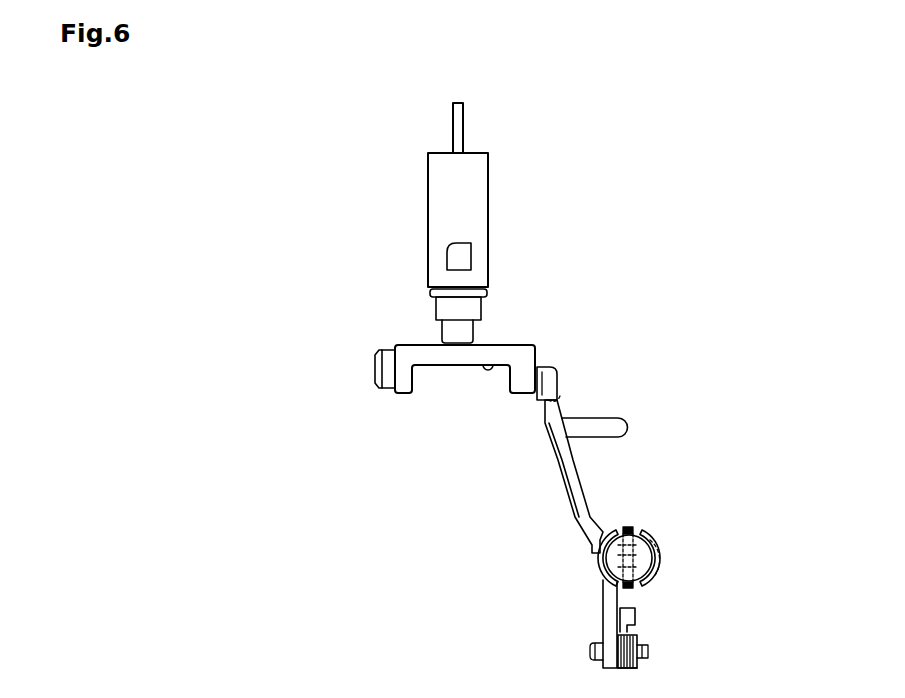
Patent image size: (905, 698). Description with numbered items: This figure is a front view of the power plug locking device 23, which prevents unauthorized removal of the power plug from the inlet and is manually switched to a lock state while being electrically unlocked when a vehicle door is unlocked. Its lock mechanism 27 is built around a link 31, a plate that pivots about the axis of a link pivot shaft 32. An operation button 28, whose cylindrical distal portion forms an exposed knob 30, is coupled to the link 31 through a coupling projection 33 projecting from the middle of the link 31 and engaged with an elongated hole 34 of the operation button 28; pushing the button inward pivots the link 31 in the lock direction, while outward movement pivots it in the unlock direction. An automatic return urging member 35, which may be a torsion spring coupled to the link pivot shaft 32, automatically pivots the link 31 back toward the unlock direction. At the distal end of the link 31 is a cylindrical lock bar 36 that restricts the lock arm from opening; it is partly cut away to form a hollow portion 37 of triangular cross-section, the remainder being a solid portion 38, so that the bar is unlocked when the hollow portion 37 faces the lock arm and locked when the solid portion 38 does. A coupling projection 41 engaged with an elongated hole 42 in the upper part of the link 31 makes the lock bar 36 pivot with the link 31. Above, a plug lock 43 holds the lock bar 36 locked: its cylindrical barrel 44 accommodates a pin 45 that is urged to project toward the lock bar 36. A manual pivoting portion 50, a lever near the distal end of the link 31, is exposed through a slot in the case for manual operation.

The power plug locking device 23 is at (275, 170).
The lock mechanism 27 is at (441, 426).
The operation button 28 is at (694, 525).
The knob 30 is at (655, 552).
The link 31 is at (573, 500).
The link pivot shaft 32 is at (648, 650).
The coupling projection 33 is at (657, 565).
The elongated hole 34 is at (632, 532).
The automatic return urging member 35 is at (633, 632).
The lock bar 36 is at (527, 350).
The hollow portion 37 is at (495, 365).
The solid portion 38 is at (403, 350).
The coupling projection 41 is at (557, 392).
The elongated hole 42 is at (557, 398).
The plug lock 43 is at (552, 170).
The barrel 44 is at (480, 200).
The pin 45 is at (443, 335).
The manual pivoting portion 50 is at (617, 418).